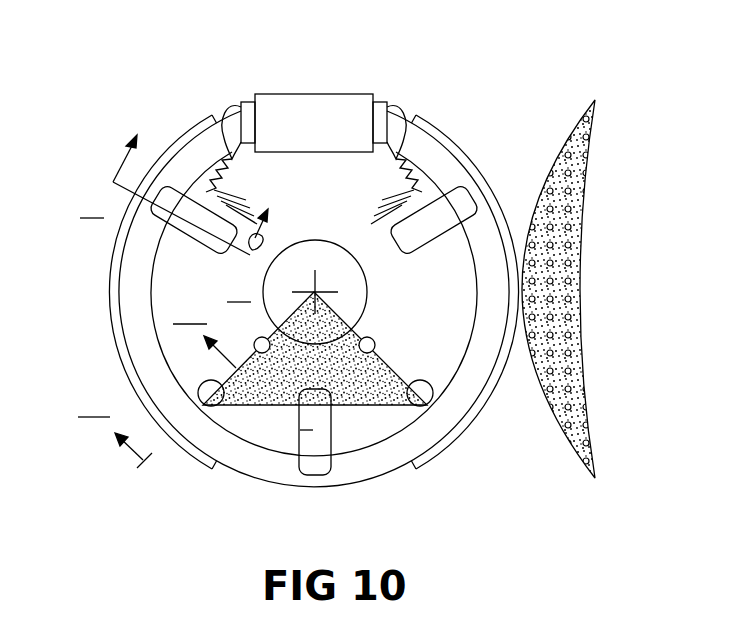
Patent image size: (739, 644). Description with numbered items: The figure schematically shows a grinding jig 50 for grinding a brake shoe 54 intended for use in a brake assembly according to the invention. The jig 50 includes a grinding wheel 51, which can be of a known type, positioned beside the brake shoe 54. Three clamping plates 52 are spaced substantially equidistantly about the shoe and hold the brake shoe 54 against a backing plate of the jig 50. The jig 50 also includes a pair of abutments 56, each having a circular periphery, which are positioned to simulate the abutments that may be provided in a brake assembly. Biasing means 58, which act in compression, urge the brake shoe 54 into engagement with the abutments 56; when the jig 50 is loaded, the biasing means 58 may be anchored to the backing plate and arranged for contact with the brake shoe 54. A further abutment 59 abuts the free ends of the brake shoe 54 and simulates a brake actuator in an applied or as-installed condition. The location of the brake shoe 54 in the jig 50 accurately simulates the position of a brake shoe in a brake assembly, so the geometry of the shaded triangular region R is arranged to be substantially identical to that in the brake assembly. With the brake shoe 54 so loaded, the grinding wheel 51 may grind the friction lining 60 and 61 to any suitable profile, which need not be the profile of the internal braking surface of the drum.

The grinding jig 50 is at (196, 500).
The grinding wheel 51 is at (563, 150).
The clamping plates 52 is at (192, 233).
The brake shoe 54 is at (462, 404).
The abutments 56 is at (199, 394).
The biasing means 58 is at (223, 120).
The abutment 59 is at (306, 110).
The friction lining 60 is at (109, 291).
The friction lining 61 is at (490, 402).
The shaded triangular region R is at (363, 406).